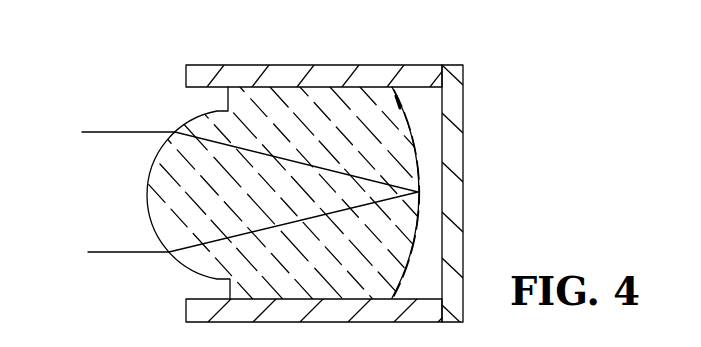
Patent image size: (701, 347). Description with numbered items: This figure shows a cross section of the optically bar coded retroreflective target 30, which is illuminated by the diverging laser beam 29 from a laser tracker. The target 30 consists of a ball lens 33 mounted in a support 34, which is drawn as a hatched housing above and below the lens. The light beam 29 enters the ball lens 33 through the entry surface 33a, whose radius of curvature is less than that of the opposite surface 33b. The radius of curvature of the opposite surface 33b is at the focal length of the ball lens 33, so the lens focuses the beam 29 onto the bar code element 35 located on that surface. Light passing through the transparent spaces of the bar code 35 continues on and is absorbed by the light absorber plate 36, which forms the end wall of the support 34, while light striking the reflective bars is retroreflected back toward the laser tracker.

The laser beam 29 is at (72, 131).
The optically bar coded retroreflective target 30 is at (172, 105).
The ball lens 33 is at (333, 128).
The light entry surface of ball lens 33a is at (189, 269).
The opposite surface of ball lens 33b is at (408, 260).
The support 34 is at (378, 64).
The bar code element 35 is at (417, 138).
The light absorber plate 36 is at (464, 207).